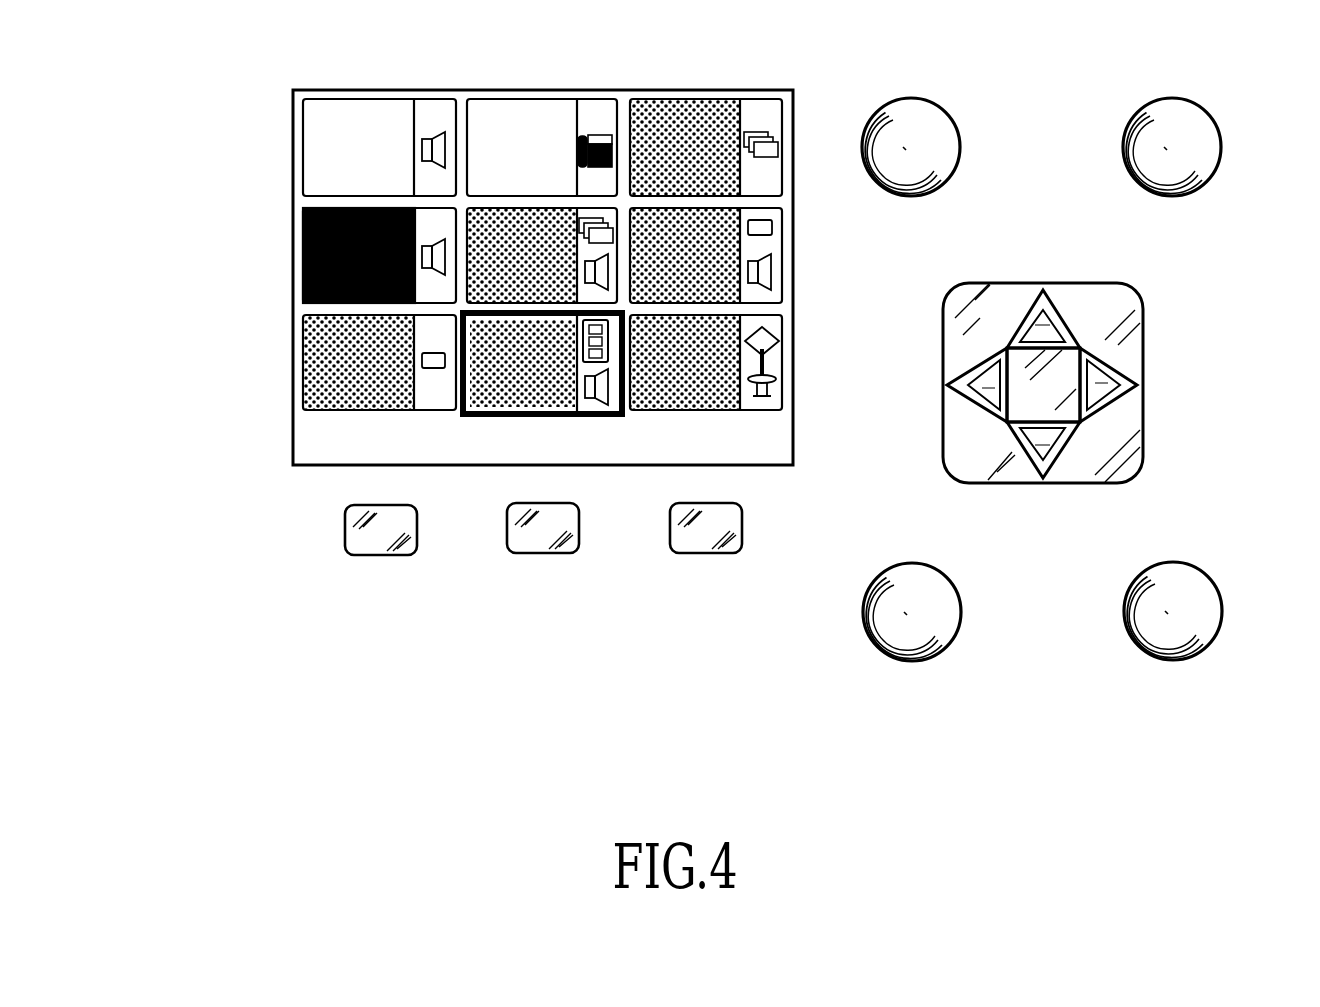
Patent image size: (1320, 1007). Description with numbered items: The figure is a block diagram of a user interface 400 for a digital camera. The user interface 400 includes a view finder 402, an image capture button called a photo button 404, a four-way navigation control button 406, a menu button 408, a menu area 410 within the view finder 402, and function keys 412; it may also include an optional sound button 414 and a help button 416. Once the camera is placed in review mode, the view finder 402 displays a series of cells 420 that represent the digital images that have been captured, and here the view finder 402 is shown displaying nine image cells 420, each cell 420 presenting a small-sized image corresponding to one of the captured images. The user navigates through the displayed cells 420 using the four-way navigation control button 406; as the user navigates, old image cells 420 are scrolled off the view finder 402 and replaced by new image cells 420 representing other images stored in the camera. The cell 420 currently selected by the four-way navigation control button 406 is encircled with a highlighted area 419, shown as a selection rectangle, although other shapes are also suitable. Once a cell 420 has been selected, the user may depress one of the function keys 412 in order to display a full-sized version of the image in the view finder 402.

The user interface 400 is at (702, 794).
The view finder 402 is at (292, 108).
The photo button 404 is at (938, 108).
The four-way navigation control button 406 is at (1143, 342).
The menu button 408 is at (938, 573).
The menu area 410 is at (256, 430).
The function keys 412 is at (316, 549).
The sound button 414 is at (1198, 108).
The help button 416 is at (1200, 573).
The highlighted area 419 is at (596, 417).
The cells 420 is at (303, 232).